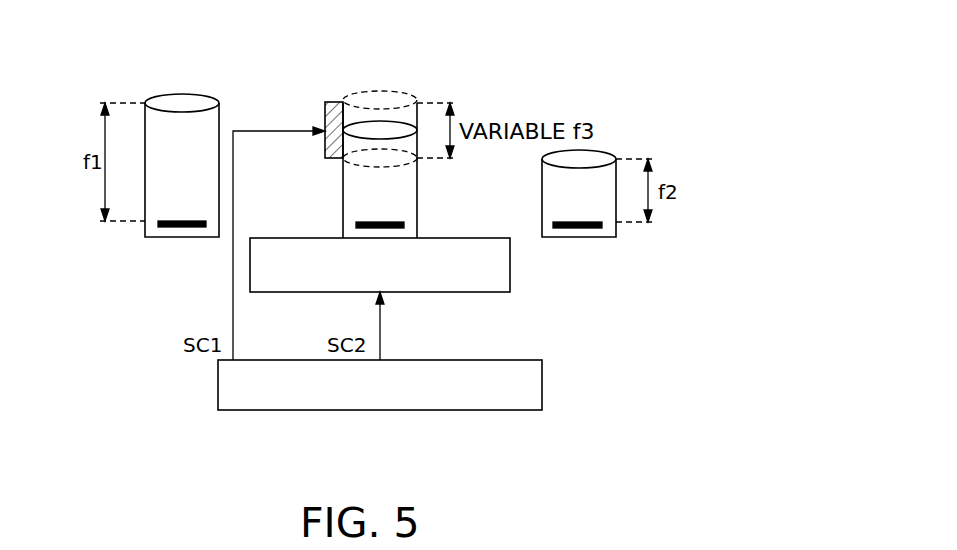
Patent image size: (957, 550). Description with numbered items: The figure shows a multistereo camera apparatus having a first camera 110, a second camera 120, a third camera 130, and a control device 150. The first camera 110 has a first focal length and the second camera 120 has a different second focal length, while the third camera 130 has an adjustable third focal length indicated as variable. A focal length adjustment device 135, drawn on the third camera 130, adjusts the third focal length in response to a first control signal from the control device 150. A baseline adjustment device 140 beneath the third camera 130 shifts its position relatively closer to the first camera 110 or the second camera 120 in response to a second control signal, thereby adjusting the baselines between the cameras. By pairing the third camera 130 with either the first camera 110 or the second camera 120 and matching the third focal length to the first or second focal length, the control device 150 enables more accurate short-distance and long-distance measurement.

The first camera 110 is at (155, 237).
The second camera 120 is at (603, 237).
The third camera 130 is at (417, 197).
The focal length adjustment device 135 is at (333, 102).
The baseline adjustment device 140 is at (510, 262).
The control device 150 is at (542, 383).